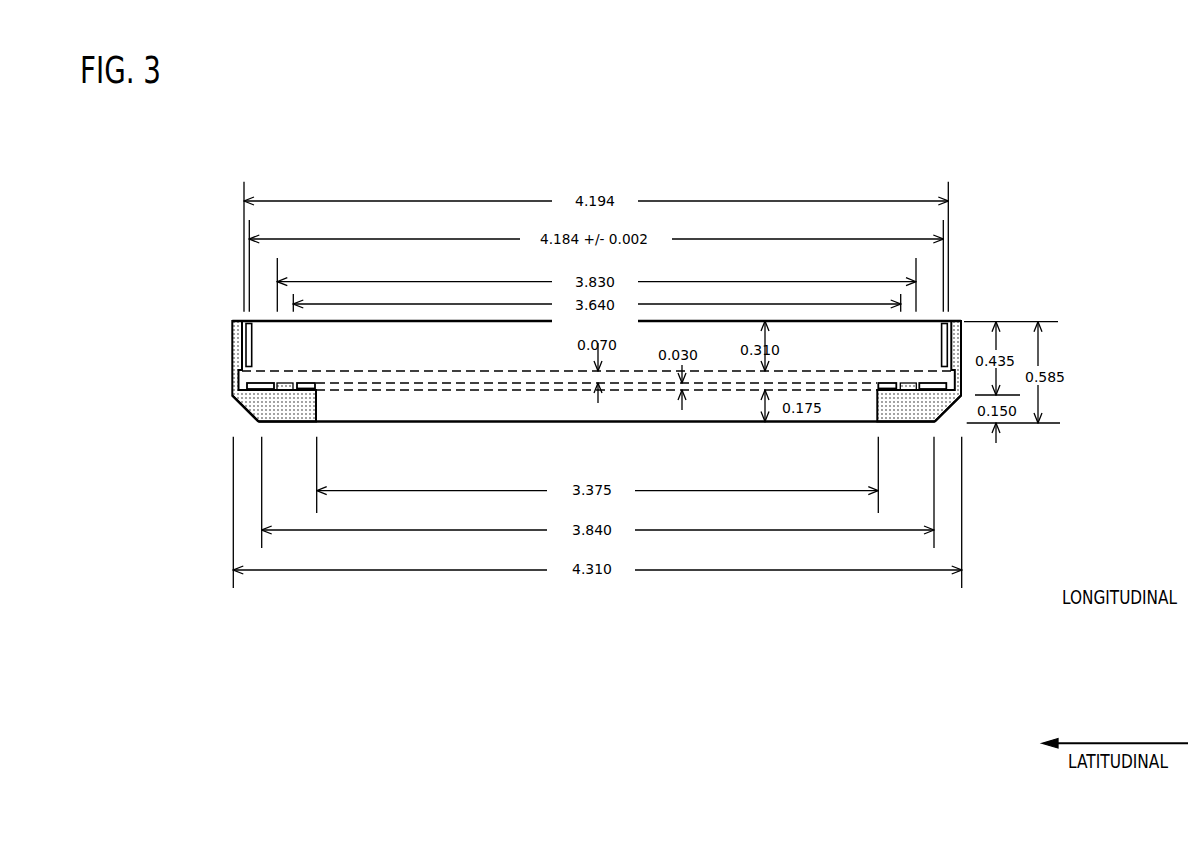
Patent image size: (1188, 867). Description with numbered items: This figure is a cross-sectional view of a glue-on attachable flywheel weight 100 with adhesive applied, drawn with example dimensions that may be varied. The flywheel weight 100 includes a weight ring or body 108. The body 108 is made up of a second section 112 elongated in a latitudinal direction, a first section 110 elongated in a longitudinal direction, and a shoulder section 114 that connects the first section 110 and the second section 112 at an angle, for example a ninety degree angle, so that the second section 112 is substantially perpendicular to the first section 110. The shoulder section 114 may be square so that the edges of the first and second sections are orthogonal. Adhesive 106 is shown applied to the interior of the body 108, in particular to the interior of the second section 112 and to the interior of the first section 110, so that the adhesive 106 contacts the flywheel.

The flywheel weight 100 is at (565, 257).
The adhesive 106 is at (259, 383).
The weight ring or body 108 is at (241, 321).
The first section 110 is at (232, 343).
The second section 112 is at (266, 422).
The shoulder section 114 is at (232, 397).